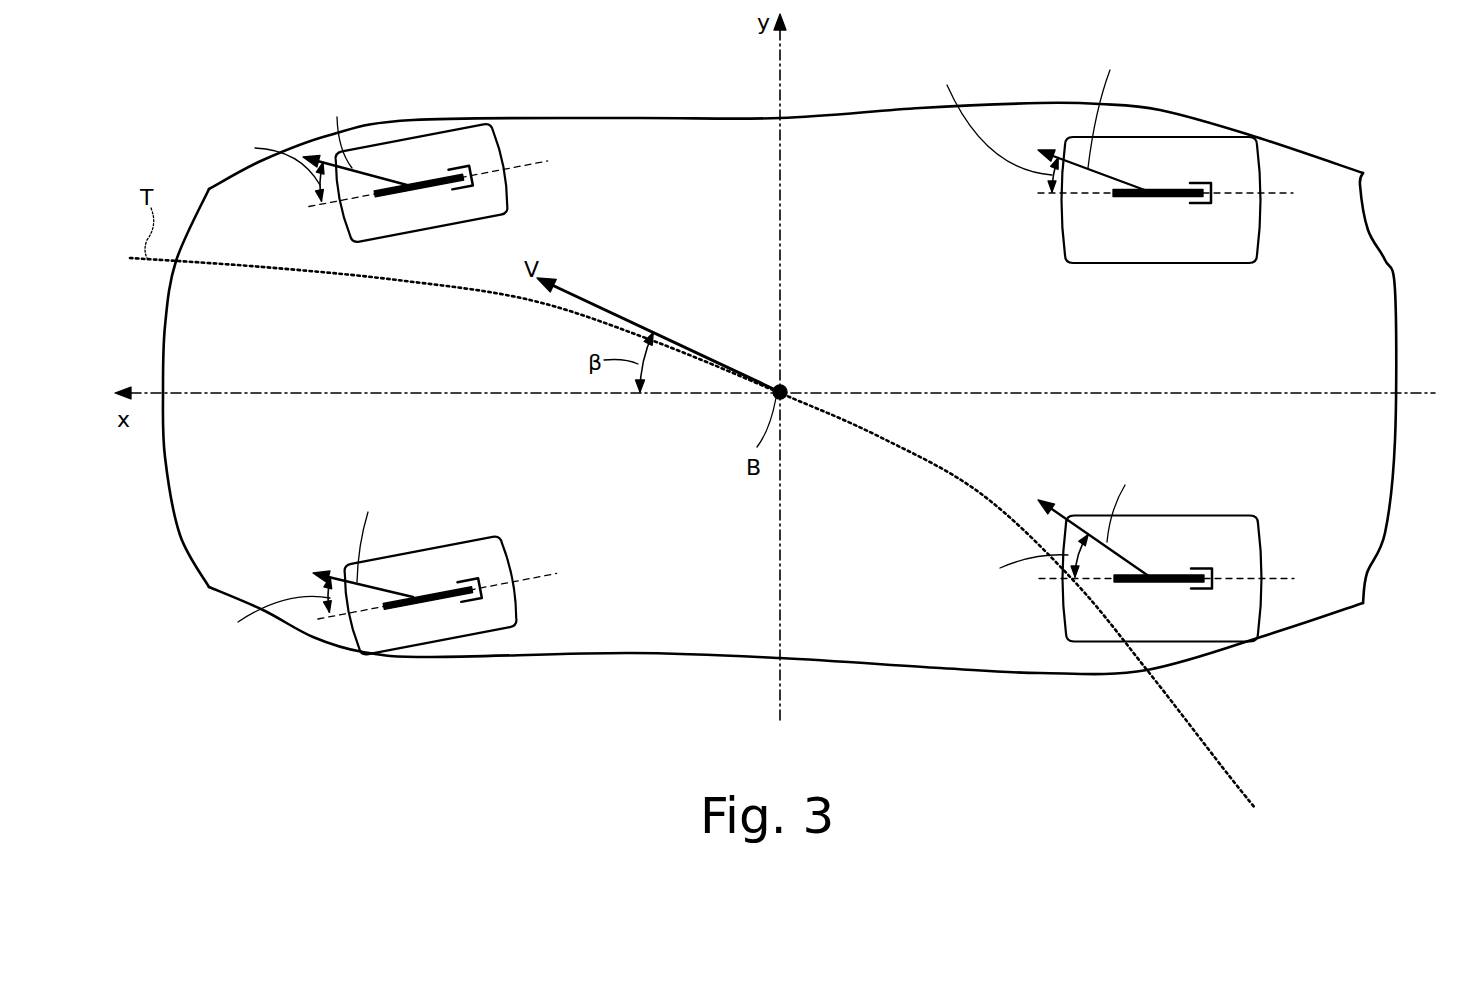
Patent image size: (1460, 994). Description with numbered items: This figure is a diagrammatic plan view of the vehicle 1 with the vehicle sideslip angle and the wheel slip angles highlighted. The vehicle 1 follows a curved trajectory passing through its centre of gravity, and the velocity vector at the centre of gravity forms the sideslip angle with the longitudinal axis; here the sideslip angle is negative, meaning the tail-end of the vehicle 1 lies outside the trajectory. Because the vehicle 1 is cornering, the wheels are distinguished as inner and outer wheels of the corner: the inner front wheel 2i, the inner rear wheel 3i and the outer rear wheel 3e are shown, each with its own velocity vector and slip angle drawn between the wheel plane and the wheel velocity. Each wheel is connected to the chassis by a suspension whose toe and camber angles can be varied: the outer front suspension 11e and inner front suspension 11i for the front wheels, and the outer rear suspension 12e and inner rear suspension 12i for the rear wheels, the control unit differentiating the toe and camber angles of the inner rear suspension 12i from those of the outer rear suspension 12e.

The vehicle 1 is at (1337, 698).
The inner front wheel 2i is at (503, 622).
The outer rear wheel 3e is at (470, 150).
The inner rear wheel 3i is at (1202, 630).
The outer front suspension 11e is at (500, 202).
The inner front suspension 11i is at (506, 609).
The outer rear suspension 12e is at (1224, 223).
The inner rear suspension 12i is at (1230, 622).